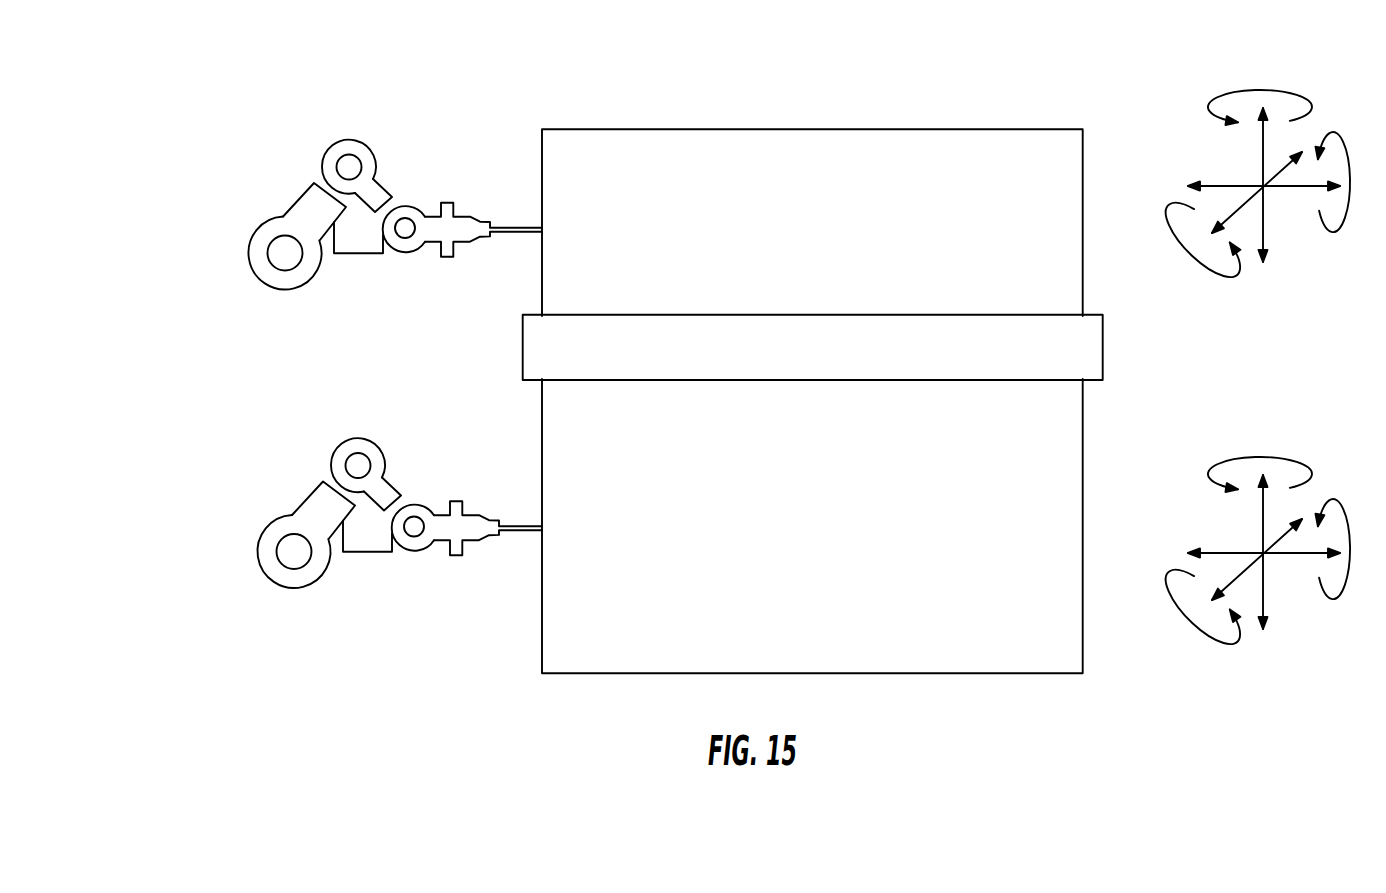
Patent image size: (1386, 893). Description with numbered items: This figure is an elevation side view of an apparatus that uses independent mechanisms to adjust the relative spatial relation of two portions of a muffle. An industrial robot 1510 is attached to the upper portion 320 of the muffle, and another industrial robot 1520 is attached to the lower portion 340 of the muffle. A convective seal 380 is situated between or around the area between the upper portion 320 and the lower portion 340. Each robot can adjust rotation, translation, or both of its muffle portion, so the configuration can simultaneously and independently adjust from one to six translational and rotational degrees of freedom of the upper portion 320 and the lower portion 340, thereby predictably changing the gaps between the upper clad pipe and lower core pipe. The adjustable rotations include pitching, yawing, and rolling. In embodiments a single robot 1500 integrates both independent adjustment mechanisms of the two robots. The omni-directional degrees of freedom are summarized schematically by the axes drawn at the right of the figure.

The single robot 1500 is at (192, 600).
The industrial robot 1510 is at (495, 126).
The industrial robot 1520 is at (512, 615).
The upper portion of the muffle 320 is at (1058, 128).
The lower portion of the muffle 340 is at (1083, 565).
The convective seal 380 is at (1088, 313).